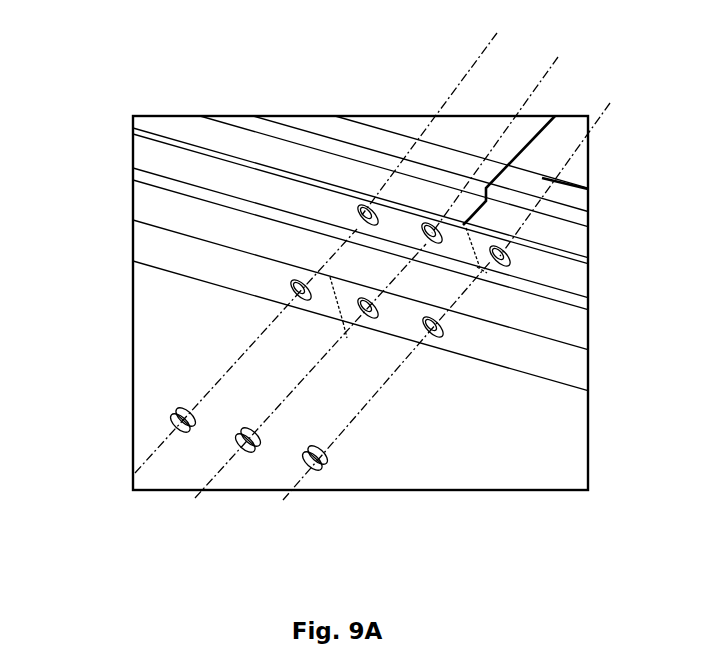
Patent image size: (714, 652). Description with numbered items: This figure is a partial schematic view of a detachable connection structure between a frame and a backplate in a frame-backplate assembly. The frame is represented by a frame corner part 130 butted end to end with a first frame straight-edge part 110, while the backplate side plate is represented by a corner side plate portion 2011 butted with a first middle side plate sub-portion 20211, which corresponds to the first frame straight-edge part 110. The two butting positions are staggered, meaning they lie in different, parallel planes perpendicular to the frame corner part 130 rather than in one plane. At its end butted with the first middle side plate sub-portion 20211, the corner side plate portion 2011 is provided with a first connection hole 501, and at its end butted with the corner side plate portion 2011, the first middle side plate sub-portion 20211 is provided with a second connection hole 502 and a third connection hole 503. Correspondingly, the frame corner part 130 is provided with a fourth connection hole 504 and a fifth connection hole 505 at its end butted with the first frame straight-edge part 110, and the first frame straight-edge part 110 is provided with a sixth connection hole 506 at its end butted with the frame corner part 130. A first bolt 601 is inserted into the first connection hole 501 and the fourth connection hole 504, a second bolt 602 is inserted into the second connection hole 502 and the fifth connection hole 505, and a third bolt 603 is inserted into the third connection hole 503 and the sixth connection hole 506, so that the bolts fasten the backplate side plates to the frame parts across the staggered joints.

The first frame straight-edge part 110 is at (167, 220).
The frame corner part 130 is at (540, 332).
The corner side plate portion 2011 is at (542, 178).
The first middle side plate sub-portion 20211 is at (250, 168).
The first connection hole 501 is at (508, 253).
The second connection hole 502 is at (440, 232).
The third connection hole 503 is at (376, 204).
The fourth connection hole 504 is at (445, 326).
The fifth connection hole 505 is at (376, 318).
The sixth connection hole 506 is at (297, 291).
The first bolt 601 is at (310, 455).
The second bolt 602 is at (243, 447).
The third bolt 603 is at (173, 421).